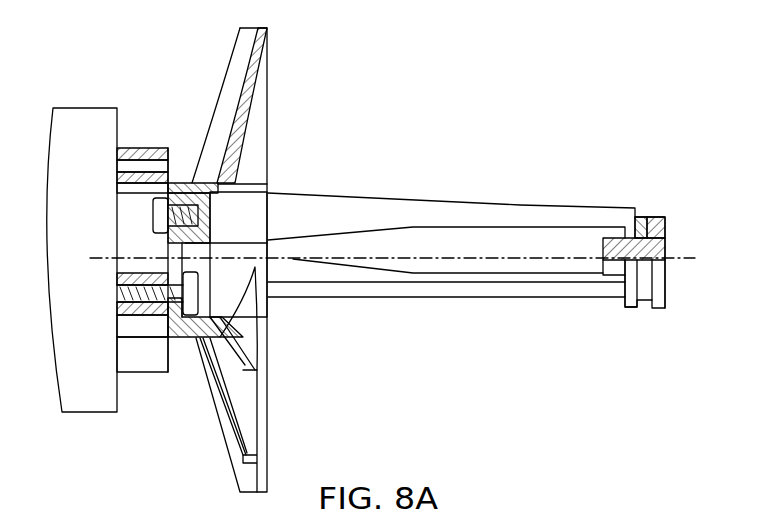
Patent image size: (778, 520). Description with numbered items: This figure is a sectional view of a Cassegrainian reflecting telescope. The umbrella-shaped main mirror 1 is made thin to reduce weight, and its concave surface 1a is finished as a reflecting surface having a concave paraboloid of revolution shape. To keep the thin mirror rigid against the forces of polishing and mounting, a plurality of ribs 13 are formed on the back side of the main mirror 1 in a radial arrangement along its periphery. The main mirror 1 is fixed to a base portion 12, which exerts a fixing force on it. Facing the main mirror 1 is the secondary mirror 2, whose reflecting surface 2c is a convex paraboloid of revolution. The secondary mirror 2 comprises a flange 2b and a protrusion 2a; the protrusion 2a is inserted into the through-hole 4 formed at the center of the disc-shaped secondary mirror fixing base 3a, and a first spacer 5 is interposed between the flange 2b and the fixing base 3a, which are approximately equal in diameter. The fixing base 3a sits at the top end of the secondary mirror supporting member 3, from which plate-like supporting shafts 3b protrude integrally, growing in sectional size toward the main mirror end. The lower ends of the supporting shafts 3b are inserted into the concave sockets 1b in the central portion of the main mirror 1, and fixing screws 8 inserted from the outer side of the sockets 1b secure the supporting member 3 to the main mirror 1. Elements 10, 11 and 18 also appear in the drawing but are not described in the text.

The main mirror 1 is at (270, 58).
The concave surface 1a is at (247, 97).
The sockets 1b is at (178, 181).
The secondary mirror 2 is at (662, 222).
The protrusion 2a is at (606, 243).
The flange 2b is at (667, 282).
The reflecting surface 2c is at (600, 265).
The secondary mirror supporting member 3 is at (460, 203).
The secondary mirror fixing base 3a is at (630, 308).
The supporting shafts 3b is at (458, 298).
The through-hole 4 is at (632, 240).
The first spacer 5 is at (648, 237).
The fixing screws 8 is at (153, 222).
The sleeve 10 is at (217, 243).
The support block 11 is at (77, 108).
The base portion 12 is at (140, 372).
The ribs 13 is at (238, 372).
The bolt 18 is at (200, 292).